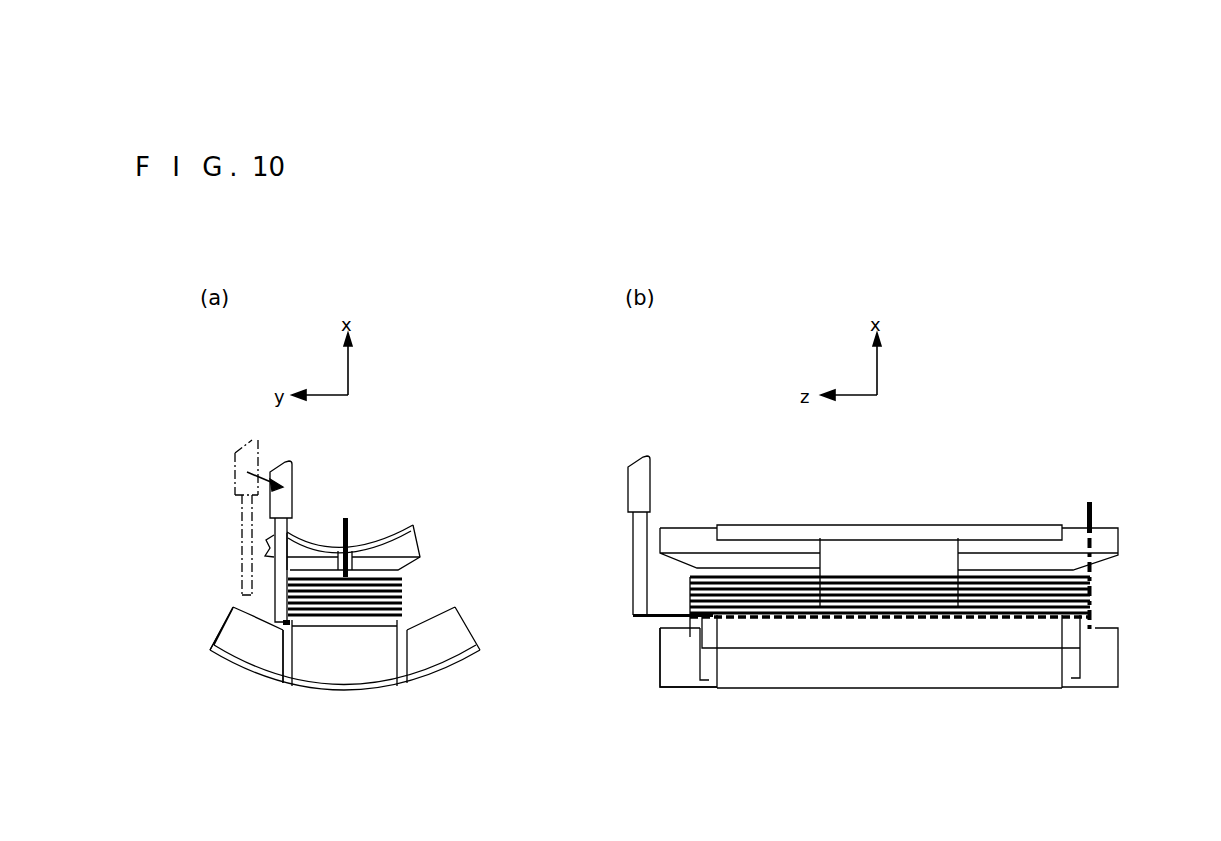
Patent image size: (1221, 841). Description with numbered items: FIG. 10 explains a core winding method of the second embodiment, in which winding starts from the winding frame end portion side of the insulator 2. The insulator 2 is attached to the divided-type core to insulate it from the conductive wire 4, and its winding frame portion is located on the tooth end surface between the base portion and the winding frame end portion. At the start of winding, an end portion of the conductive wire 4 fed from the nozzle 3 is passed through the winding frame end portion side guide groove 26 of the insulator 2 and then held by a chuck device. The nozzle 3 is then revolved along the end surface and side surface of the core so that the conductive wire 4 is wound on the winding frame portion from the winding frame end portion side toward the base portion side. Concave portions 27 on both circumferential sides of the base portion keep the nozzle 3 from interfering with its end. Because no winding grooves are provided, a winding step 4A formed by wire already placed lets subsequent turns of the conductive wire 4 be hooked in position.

The insulator 2 is at (645, 678).
The nozzle 3 is at (632, 488).
The conductive wire 4 is at (695, 637).
The winding step 4A is at (363, 618).
The winding frame end portion side guide groove 26 is at (352, 556).
The concave portion 27 is at (238, 648).